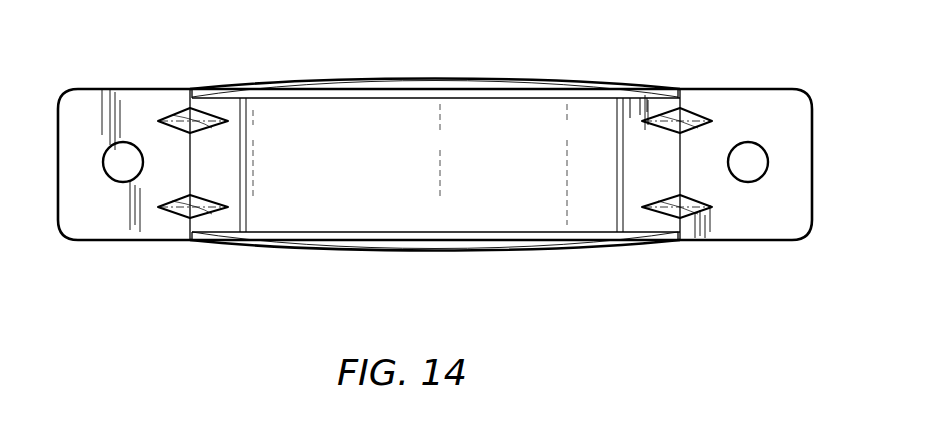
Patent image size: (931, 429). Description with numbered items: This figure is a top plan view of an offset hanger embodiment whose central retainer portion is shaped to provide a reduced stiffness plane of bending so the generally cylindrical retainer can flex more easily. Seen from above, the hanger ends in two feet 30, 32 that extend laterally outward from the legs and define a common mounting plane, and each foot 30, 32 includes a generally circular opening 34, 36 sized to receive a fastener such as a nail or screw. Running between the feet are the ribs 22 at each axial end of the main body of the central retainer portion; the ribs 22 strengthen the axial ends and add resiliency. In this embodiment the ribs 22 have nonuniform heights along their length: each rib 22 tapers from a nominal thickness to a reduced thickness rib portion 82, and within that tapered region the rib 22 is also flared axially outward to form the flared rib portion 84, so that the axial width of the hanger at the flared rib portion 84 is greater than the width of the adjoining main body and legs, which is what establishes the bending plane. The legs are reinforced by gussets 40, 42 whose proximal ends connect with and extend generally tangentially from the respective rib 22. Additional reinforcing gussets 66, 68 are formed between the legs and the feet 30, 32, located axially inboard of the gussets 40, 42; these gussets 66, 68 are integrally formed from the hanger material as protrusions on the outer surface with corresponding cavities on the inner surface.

The rib 22 is at (573, 84).
The foot 30 is at (72, 100).
The foot 32 is at (775, 95).
The opening 34 is at (115, 182).
The opening 36 is at (750, 183).
The gusset 40 is at (200, 92).
The gusset 42 is at (660, 92).
The gusset 66 is at (185, 118).
The gusset 68 is at (685, 110).
The reduced thickness rib portion 82 is at (434, 78).
The flared rib portion 84 is at (372, 87).